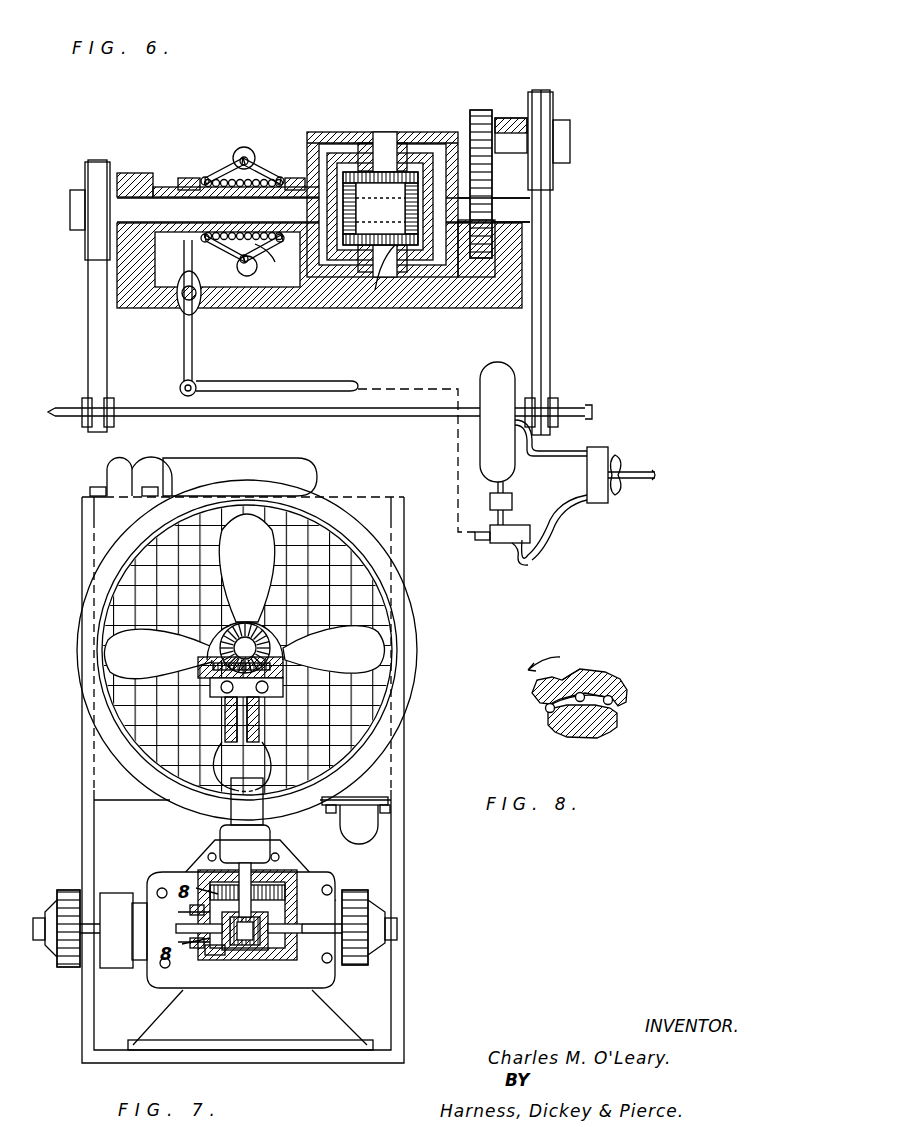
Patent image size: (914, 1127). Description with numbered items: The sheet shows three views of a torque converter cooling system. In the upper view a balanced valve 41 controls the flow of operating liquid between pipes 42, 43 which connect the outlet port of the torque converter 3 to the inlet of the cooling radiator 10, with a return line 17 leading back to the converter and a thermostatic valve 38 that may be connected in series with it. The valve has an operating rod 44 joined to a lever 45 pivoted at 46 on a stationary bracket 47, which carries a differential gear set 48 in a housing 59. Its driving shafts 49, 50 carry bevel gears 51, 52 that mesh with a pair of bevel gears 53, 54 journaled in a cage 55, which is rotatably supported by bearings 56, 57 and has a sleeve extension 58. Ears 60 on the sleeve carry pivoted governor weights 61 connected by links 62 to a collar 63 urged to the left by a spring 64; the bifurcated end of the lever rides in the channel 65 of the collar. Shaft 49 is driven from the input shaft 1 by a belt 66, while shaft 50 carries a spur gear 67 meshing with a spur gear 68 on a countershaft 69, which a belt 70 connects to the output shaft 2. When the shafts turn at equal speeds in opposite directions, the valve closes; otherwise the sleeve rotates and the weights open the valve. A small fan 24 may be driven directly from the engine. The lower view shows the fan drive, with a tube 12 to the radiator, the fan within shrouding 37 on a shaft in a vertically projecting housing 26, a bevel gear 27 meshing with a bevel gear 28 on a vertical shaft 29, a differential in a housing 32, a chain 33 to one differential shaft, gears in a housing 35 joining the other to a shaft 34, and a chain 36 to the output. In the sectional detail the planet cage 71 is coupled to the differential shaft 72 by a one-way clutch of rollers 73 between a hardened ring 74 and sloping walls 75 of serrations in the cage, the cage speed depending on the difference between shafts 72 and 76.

In FIG. 6, the input shaft 1 is at (70, 410).
In FIG. 6, the output shaft 2 is at (565, 412).
In FIG. 6, the torque converter 3 is at (498, 368).
In FIG. 6, the cooling radiator 10 is at (596, 452).
In FIG. 7, the elongated tube 12 is at (198, 470).
In FIG. 6, the return line 17 is at (533, 457).
In FIG. 6, the fan 24 is at (636, 470).
In FIG. 7, the fan 24 is at (378, 648).
In FIG. 7, the vertically projecting housing 26 is at (235, 812).
In FIG. 7, the bevel gear 27 is at (246, 628).
In FIG. 7, the bevel gear 28 is at (195, 655).
In FIG. 7, the vertical shaft 29 is at (250, 742).
In FIG. 7, the housing 32 is at (228, 985).
In FIG. 7, the chain 33 is at (340, 905).
In FIG. 7, the shaft 34 is at (36, 938).
In FIG. 7, the housing 35 is at (112, 962).
In FIG. 7, the chain 36 is at (66, 892).
In FIG. 7, the shrouding 37 is at (378, 555).
In FIG. 6, the thermostatic valve 38 is at (510, 500).
In FIG. 6, the balanced valve 41 is at (512, 548).
In FIG. 6, the pipe 42 is at (508, 524).
In FIG. 6, the pipe 43 is at (553, 528).
In FIG. 6, the operating rod 44 is at (268, 384).
In FIG. 6, the lever 45 is at (192, 358).
In FIG. 6, the pivot 46 is at (183, 300).
In FIG. 6, the stationary bracket 47 is at (127, 305).
In FIG. 6, the differential gear set 48 is at (420, 150).
In FIG. 6, the driving shaft 49 is at (160, 200).
In FIG. 6, the driving shaft 50 is at (517, 212).
In FIG. 6, the bevel gear 51 is at (380, 208).
In FIG. 6, the bevel gear 52 is at (405, 205).
In FIG. 6, the bevel gear 53 is at (380, 180).
In FIG. 6, the bevel gear 54 is at (389, 273).
In FIG. 6, the cage 55 is at (333, 160).
In FIG. 6, the bearing 56 is at (340, 196).
In FIG. 6, the bearing 57 is at (443, 220).
In FIG. 6, the sleeve extension 58 is at (285, 182).
In FIG. 6, the housing 59 is at (412, 133).
In FIG. 6, the ears 60 is at (272, 247).
In FIG. 6, the governor weight 61 is at (244, 150).
In FIG. 6, the link 62 is at (222, 180).
In FIG. 6, the collar 63 is at (202, 180).
In FIG. 6, the spring 64 is at (264, 178).
In FIG. 6, the channel 65 is at (185, 180).
In FIG. 6, the belt 66 is at (95, 280).
In FIG. 6, the spur gear 67 is at (478, 240).
In FIG. 6, the spur gear 68 is at (479, 112).
In FIG. 6, the countershaft 69 is at (500, 140).
In FIG. 6, the belt 70 is at (548, 196).
In FIG. 7, the planet cage 71 is at (210, 890).
In FIG. 8, the planet cage 71 is at (605, 680).
In FIG. 7, the differential shaft 72 is at (212, 945).
In FIG. 8, the differential shaft 72 is at (567, 736).
In FIG. 7, the rollers 73 is at (188, 916).
In FIG. 8, the rollers 73 is at (545, 708).
In FIG. 7, the hardened ring 74 is at (245, 931).
In FIG. 8, the hardened ring 74 is at (560, 710).
In FIG. 8, the sloping walls 75 is at (573, 676).
In FIG. 7, the differential shaft 76 is at (296, 926).